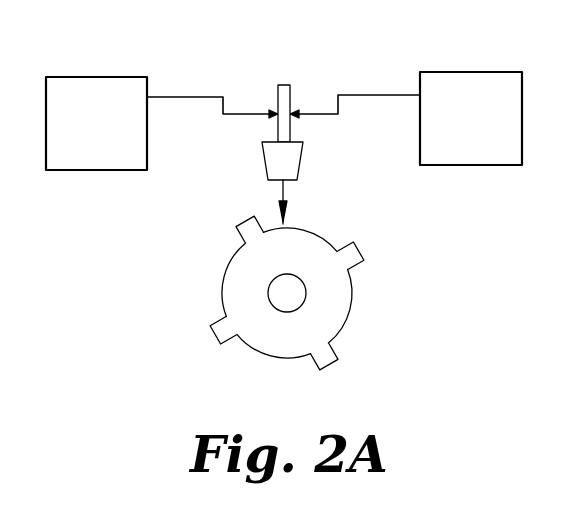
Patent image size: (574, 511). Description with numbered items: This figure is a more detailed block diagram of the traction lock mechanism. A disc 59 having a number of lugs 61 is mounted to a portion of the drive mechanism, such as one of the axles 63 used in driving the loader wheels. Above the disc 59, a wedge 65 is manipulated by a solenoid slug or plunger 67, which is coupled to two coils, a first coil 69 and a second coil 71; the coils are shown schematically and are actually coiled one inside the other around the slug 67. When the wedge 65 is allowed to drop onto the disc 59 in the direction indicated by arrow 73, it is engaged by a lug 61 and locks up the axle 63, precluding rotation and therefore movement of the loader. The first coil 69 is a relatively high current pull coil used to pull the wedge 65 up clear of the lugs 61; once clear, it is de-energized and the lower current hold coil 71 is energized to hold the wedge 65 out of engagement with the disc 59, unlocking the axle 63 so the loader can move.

The first coil 69 is at (72, 77).
The hold coil 71 is at (503, 72).
The solenoid slug 67 is at (285, 84).
The wedge 65 is at (265, 163).
The arrow 73 is at (283, 192).
The disc 59 is at (230, 273).
The axle 63 is at (304, 298).
The lugs 61 is at (256, 220).